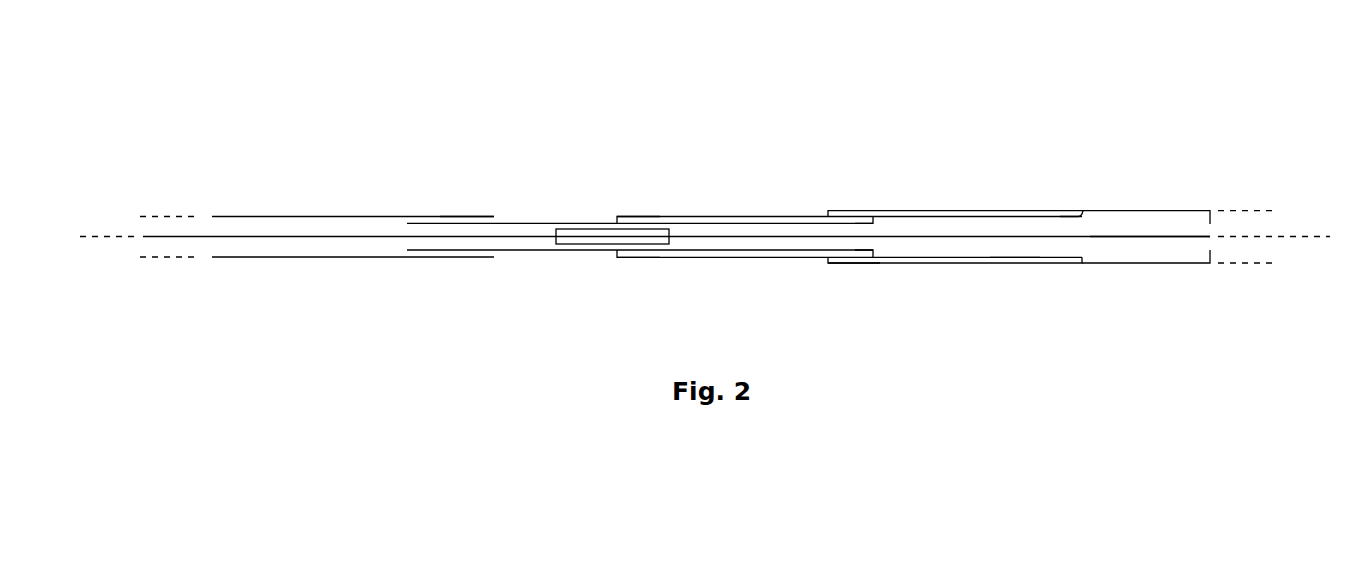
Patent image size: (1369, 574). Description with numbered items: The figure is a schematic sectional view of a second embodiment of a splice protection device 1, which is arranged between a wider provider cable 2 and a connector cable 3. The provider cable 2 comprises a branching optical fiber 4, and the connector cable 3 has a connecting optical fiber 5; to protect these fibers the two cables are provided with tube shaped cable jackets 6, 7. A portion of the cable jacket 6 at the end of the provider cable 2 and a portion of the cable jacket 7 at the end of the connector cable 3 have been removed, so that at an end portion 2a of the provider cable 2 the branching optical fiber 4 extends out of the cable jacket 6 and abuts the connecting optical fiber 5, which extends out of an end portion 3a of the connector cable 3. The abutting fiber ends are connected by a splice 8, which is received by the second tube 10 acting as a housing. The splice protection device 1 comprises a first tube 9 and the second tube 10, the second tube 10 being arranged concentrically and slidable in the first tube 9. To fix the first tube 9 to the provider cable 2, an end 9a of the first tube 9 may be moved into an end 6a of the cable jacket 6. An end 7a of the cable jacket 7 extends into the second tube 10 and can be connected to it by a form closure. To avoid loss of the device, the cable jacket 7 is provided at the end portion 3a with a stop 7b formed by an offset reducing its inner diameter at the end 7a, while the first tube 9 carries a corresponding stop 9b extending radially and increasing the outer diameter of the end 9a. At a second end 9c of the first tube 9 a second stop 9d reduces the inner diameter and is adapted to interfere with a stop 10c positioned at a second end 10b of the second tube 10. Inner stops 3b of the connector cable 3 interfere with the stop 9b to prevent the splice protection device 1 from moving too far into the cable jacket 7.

The splice protection device 1 is at (217, 92).
The provider cable 2 is at (343, 215).
The end portion of the provider cable 2a is at (443, 217).
The connector cable 3 is at (1021, 210).
The end portion of the connector cable 3a is at (865, 265).
The inner stops 3b is at (1213, 263).
The branching optical fiber 4 is at (305, 237).
The connecting optical fiber 5 is at (1110, 237).
The cable jacket 6 is at (282, 217).
The end of the cable jacket 6a is at (417, 258).
The cable jacket 7 is at (1167, 210).
The end of the cable jacket 7a is at (928, 210).
The stop 7b is at (827, 258).
The splice 8 is at (560, 241).
The first tube 9 is at (722, 257).
The end of the first tube 9a is at (1007, 257).
The stop 9b is at (1084, 212).
The second end of the first tube 9c is at (620, 216).
The second stop 9d is at (612, 255).
The second tube 10 is at (517, 222).
The second end of the second tube 10b is at (855, 222).
The stop 10c is at (873, 253).